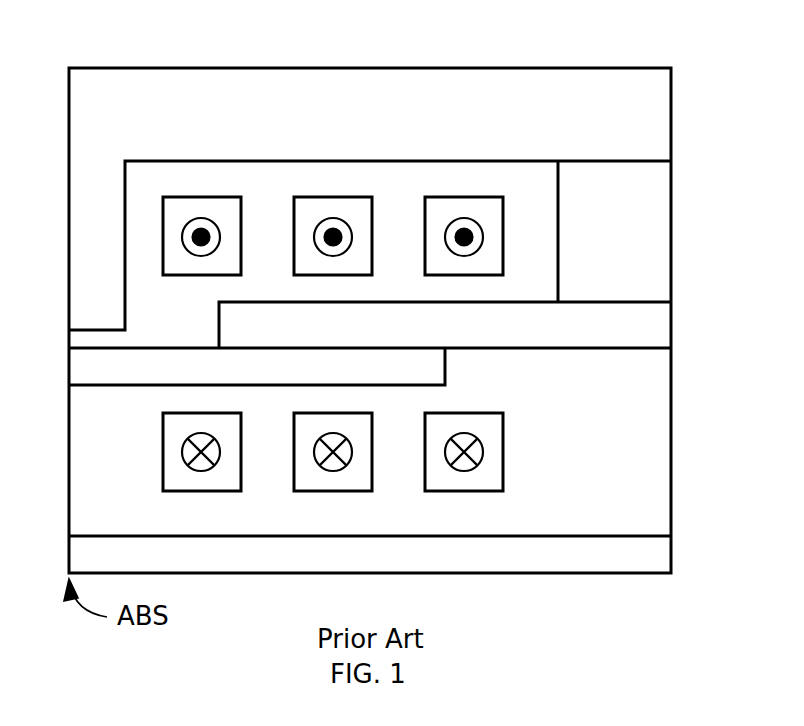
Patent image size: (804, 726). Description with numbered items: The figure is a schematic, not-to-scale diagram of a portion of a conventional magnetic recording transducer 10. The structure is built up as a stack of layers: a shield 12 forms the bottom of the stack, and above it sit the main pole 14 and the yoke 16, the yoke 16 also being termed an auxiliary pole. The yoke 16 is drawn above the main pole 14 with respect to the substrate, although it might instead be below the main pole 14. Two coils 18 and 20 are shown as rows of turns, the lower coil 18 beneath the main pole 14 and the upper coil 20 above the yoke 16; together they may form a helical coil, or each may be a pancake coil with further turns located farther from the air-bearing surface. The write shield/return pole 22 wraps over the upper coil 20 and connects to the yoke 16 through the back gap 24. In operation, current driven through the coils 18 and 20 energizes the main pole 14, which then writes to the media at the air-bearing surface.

The conventional magnetic recording transducer 10 is at (387, 42).
The shield 12 is at (671, 553).
The main pole 14 is at (69, 367).
The yoke 16 is at (671, 330).
The coil 18 is at (541, 461).
The coil 20 is at (522, 218).
The write shield/return pole 22 is at (671, 113).
The back gap 24 is at (671, 243).